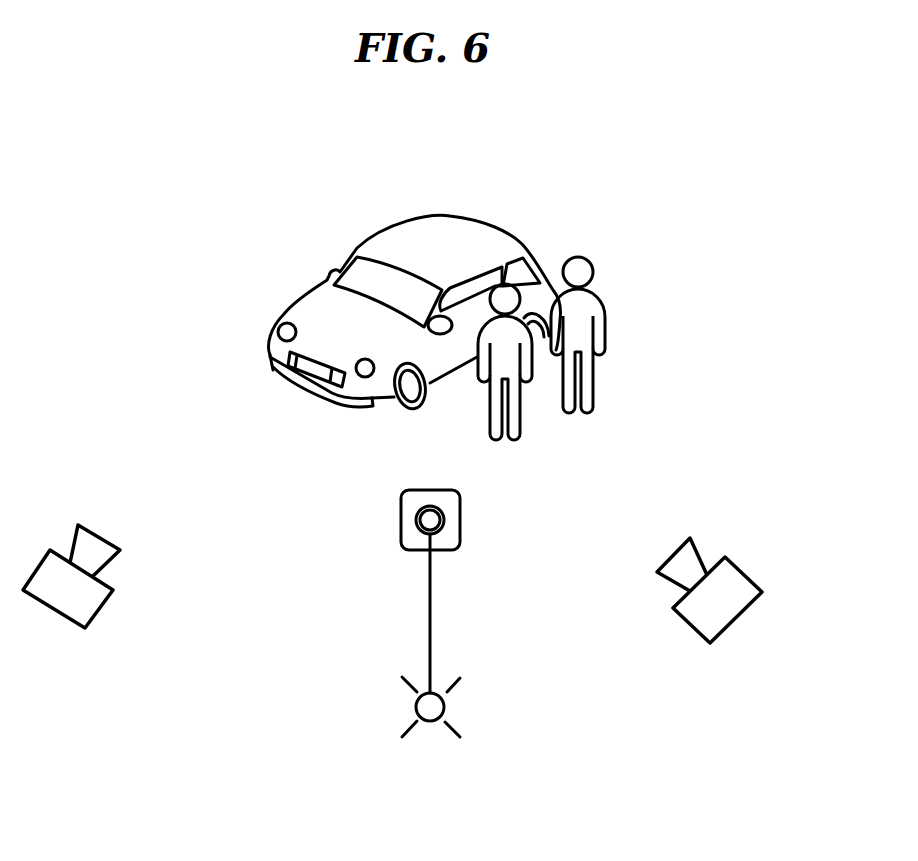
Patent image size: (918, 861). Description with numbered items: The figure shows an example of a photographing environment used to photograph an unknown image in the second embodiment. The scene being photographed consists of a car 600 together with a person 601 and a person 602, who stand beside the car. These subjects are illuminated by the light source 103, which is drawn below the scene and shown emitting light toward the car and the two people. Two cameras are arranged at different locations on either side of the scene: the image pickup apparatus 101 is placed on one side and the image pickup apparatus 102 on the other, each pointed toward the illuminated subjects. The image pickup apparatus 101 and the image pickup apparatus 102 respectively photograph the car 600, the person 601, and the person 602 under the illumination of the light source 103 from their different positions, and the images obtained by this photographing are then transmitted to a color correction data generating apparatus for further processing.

The car 600 is at (483, 206).
The person 601 is at (627, 302).
The person 602 is at (533, 420).
The image pickup apparatus 101 is at (55, 616).
The image pickup apparatus 102 is at (743, 611).
The light source 103 is at (462, 518).